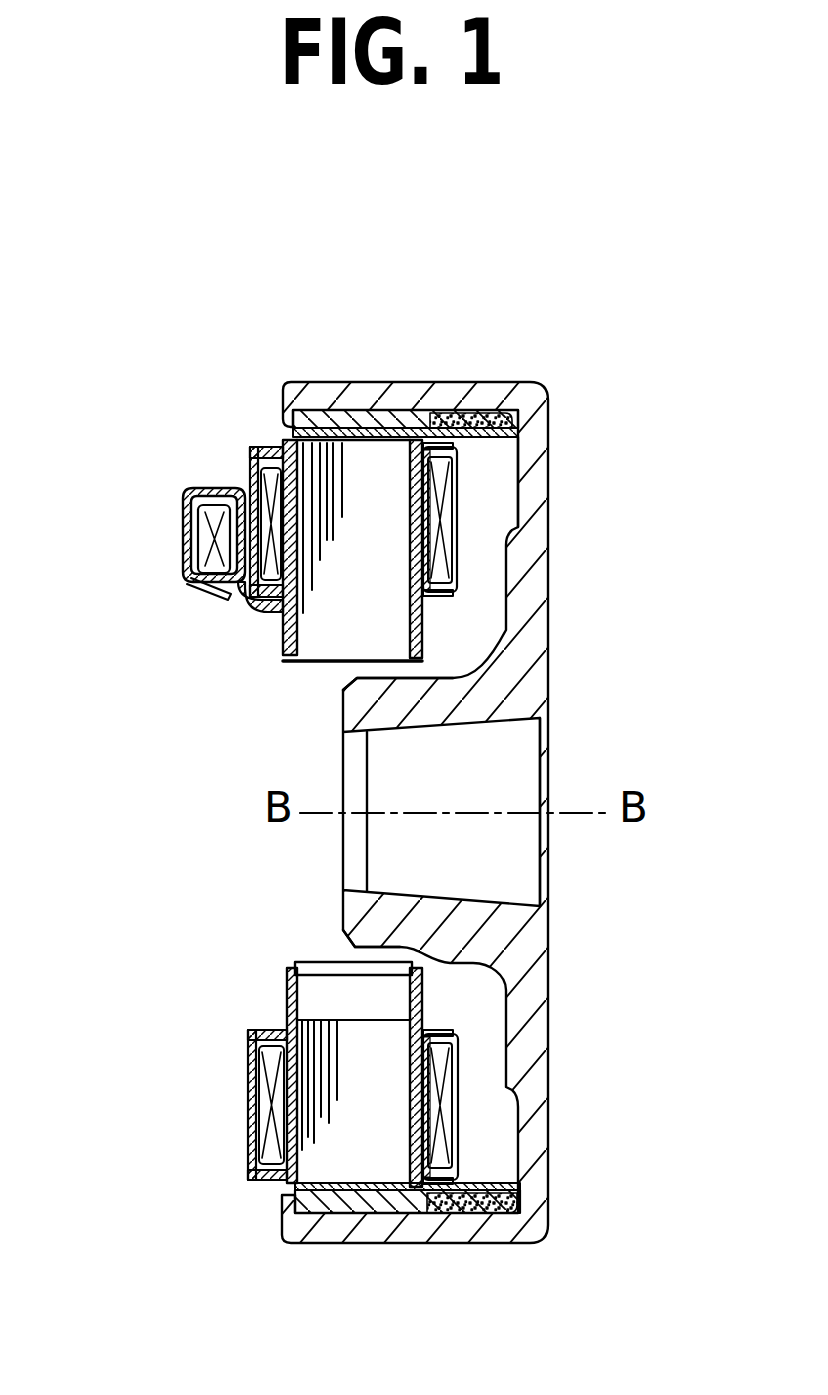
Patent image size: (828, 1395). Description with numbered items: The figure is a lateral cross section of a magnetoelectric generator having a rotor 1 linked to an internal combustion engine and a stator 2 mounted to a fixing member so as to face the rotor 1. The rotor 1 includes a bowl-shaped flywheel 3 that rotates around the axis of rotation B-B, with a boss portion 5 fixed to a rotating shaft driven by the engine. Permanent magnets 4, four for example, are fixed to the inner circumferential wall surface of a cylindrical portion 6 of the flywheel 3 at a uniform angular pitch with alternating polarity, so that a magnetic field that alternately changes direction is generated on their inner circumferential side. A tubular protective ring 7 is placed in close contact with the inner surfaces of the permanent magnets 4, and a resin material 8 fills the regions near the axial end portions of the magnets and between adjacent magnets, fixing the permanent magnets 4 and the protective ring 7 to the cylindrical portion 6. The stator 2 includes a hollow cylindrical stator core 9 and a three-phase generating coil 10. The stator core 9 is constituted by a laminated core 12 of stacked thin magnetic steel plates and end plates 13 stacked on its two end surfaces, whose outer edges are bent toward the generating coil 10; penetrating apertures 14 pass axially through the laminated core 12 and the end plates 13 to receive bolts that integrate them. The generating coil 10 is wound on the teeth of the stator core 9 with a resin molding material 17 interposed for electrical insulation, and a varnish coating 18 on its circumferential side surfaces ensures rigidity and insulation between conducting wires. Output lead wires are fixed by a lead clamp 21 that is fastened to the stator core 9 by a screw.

The rotor 1 is at (481, 383).
The stator 2 is at (317, 683).
The flywheel 3 is at (550, 428).
The permanent magnets 4 is at (378, 420).
The boss portion 5 is at (458, 690).
The cylindrical portion 6 is at (458, 1228).
The protective ring 7 is at (325, 437).
The resin material 8 is at (487, 1202).
The stator core 9 is at (323, 1145).
The generating coil 10 is at (298, 1181).
The laminated core 12 is at (398, 1142).
The end plates 13 is at (268, 440).
The penetrating apertures 14 is at (328, 982).
The resin molding material 17 is at (277, 612).
The coating 18 is at (458, 490).
The lead clamp 21 is at (183, 536).